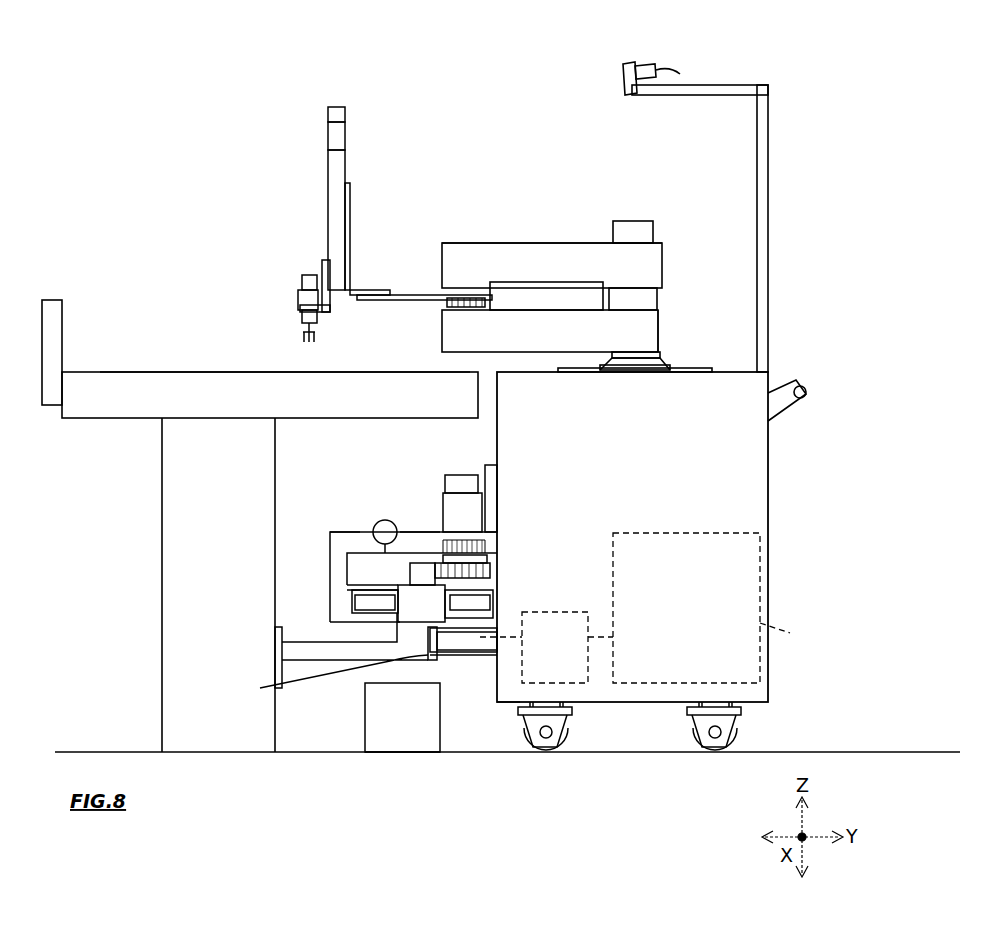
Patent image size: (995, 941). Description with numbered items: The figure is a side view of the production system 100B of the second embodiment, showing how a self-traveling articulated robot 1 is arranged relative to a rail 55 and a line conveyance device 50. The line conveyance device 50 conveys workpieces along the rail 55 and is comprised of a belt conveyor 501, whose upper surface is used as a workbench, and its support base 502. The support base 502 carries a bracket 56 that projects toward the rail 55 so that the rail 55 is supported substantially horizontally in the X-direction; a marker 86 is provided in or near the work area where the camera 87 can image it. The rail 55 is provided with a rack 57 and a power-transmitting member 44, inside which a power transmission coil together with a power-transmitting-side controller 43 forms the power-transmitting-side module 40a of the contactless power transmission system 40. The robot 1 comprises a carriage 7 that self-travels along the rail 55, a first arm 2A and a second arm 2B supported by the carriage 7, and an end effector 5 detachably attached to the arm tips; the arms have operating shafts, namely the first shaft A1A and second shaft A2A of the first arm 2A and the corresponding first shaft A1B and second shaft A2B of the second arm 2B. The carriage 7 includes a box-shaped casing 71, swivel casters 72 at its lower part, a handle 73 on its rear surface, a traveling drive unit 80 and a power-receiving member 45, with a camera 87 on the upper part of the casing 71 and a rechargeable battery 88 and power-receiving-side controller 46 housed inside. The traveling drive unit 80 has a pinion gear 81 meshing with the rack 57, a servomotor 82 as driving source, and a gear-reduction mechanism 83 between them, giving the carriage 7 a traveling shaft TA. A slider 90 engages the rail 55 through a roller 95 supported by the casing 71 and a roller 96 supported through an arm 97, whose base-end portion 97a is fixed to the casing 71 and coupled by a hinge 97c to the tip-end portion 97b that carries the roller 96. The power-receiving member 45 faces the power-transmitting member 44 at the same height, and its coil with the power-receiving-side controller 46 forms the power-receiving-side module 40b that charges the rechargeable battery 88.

The self-traveling articulated robot 1 is at (797, 73).
The production system 100B is at (463, 106).
The end effector 5 is at (302, 233).
The first arm 2A is at (664, 338).
The second arm 2B is at (664, 262).
The first shaft A1A is at (666, 321).
The first shaft A1B is at (608, 226).
The second shaft A2A is at (440, 314).
The second shaft A2B is at (473, 240).
The carriage 7 is at (665, 457).
The casing 71 is at (770, 512).
The swivel casters 72 is at (549, 754).
The handle 73 is at (800, 384).
The marker 86 is at (62, 318).
The camera 87 is at (622, 86).
The rechargeable battery 88 is at (728, 608).
The line conveyance device 50 is at (142, 372).
The belt conveyor 501 is at (218, 372).
The support base 502 is at (160, 522).
The contactless power transmission system 40 is at (434, 613).
The power-transmitting-side module 40a is at (400, 757).
The power-receiving-side module 40b is at (583, 722).
The power-transmitting-side controller 43 is at (402, 717).
The power-transmitting member 44 is at (412, 622).
The power-receiving member 45 is at (455, 656).
The power-receiving-side controller 46 is at (588, 683).
The rail 55 is at (378, 613).
The bracket 56 is at (300, 662).
The rack 57 is at (436, 556).
The traveling drive unit 80 is at (460, 455).
The pinion gear 81 is at (470, 652).
The servomotor 82 is at (468, 492).
The gear-reduction mechanism 83 is at (452, 530).
The slider 90 is at (327, 551).
The roller 95 is at (482, 618).
The roller 96 is at (380, 622).
The arm 97 is at (374, 488).
The base-end portion 97a is at (408, 532).
The tip-end portion 97b is at (342, 532).
The hinge 97c is at (379, 530).
The traveling shaft TA is at (462, 570).